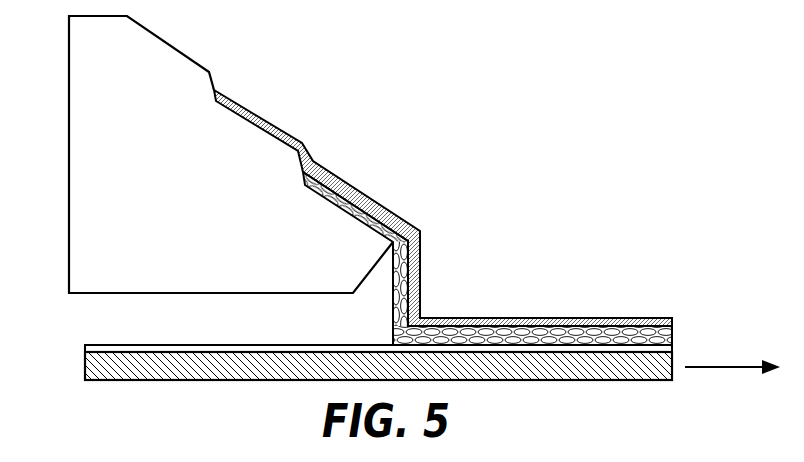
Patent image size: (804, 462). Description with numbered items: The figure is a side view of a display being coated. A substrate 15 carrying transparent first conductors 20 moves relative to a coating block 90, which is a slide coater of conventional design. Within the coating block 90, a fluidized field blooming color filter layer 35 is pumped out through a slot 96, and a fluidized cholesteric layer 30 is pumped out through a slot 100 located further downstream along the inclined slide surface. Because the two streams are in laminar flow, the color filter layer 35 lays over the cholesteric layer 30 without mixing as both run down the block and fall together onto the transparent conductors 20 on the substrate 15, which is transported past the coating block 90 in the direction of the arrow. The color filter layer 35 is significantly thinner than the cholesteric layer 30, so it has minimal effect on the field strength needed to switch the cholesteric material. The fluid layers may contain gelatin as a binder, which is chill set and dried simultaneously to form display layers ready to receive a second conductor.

The substrate 15 is at (85, 367).
The transparent first conductors 20 is at (85, 349).
The cholesteric layer 30 is at (672, 337).
The field blooming color filter layer 35 is at (672, 322).
The coating block 90 is at (69, 160).
The slot 96 is at (212, 112).
The slot 100 is at (305, 200).